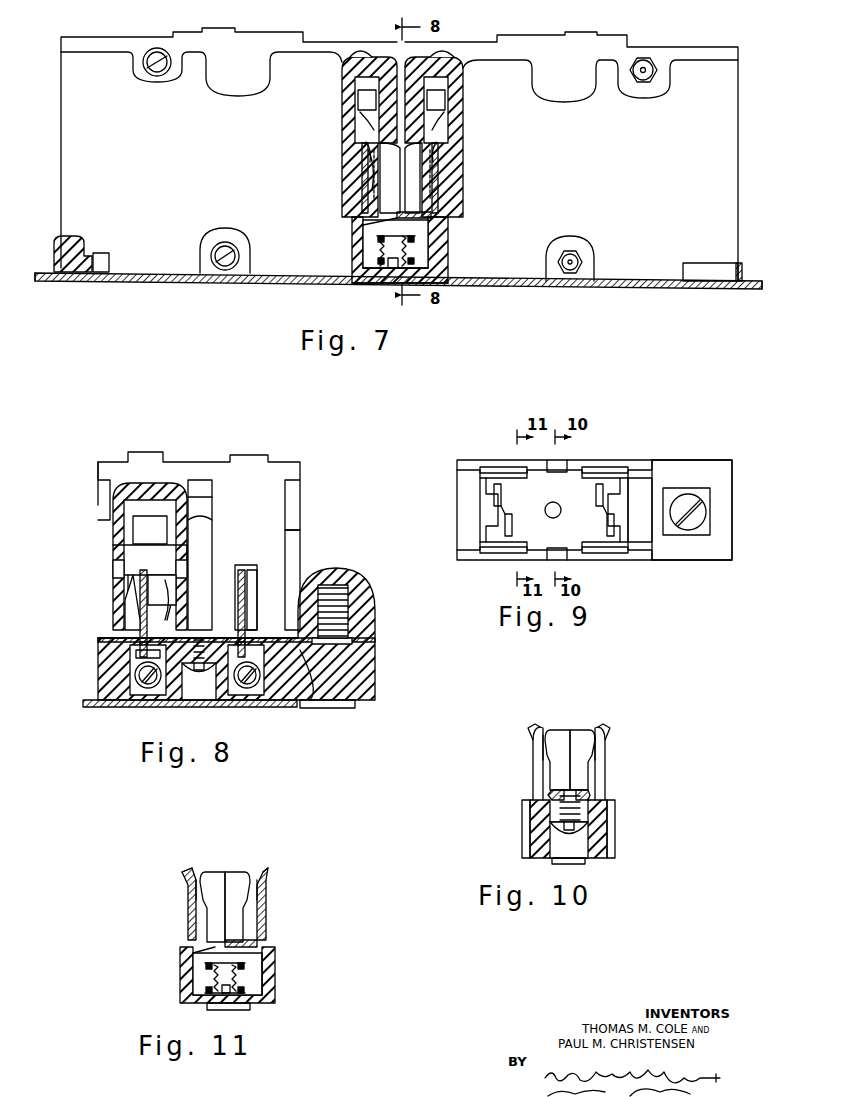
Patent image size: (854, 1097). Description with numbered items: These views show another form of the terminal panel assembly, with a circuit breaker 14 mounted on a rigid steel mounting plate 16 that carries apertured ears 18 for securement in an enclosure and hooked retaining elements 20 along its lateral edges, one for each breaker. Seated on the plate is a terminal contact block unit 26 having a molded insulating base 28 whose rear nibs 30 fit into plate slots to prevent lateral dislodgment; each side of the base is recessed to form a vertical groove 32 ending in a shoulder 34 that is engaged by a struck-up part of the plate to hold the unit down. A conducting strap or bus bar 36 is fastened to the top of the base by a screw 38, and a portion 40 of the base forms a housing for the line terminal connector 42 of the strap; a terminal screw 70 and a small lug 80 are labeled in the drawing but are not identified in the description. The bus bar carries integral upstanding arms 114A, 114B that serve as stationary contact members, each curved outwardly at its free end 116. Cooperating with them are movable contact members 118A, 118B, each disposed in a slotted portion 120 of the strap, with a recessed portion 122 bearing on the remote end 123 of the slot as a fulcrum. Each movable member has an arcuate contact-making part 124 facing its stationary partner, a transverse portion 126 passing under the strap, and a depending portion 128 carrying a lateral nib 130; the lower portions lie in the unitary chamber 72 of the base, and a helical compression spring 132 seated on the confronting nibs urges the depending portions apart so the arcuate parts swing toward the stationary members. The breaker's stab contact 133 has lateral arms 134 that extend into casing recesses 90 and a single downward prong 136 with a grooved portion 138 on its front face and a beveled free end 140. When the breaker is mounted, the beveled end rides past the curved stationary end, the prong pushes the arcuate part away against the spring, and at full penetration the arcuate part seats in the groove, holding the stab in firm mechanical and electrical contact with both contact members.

In FIG. 7, the circuit breaker 14 is at (97, 36).
In FIG. 7, the mounting plate 16 is at (200, 281).
In FIG. 7, the apertured ears 18 is at (46, 281).
In FIG. 7, the hooked retaining elements 20 is at (58, 247).
In FIG. 7, the terminal contact block unit 26 is at (440, 283).
In FIG. 8, the terminal contact block unit 26 is at (378, 678).
In FIG. 9, the terminal contact block unit 26 is at (694, 462).
In FIG. 10, the terminal contact block unit 26 is at (618, 834).
In FIG. 8, the insulating base 28 is at (375, 698).
In FIG. 10, the insulating base 28 is at (540, 834).
In FIG. 11, the insulating base 28 is at (265, 963).
In FIG. 8, the nibs 30 is at (160, 693).
In FIG. 10, the nibs 30 is at (565, 863).
In FIG. 11, the nibs 30 is at (230, 1010).
In FIG. 9, the vertical groove 32 is at (557, 463).
In FIG. 10, the shoulder 34 is at (526, 842).
In FIG. 8, the bus bar 36 is at (300, 655).
In FIG. 9, the bus bar 36 is at (639, 486).
In FIG. 10, the bus bar 36 is at (592, 792).
In FIG. 8, the screw 38 is at (208, 676).
In FIG. 9, the screw 38 is at (548, 513).
In FIG. 10, the screw 38 is at (569, 836).
In FIG. 8, the housing portion 40 is at (357, 582).
In FIG. 9, the housing portion 40 is at (718, 478).
In FIG. 8, the line terminal connector 42 is at (357, 634).
In FIG. 9, the line terminal connector 42 is at (708, 498).
In FIG. 8, the terminal screw 70 is at (338, 587).
In FIG. 9, the terminal screw 70 is at (697, 520).
In FIG. 7, the unitary chamber 72 is at (423, 249).
In FIG. 8, the unitary chamber 72 is at (167, 688).
In FIG. 11, the unitary chamber 72 is at (253, 978).
In FIG. 7, the lug 80 is at (62, 242).
In FIG. 8, the casing recesses 90 is at (113, 563).
In FIG. 7, the stationary contact member 114A is at (457, 150).
In FIG. 9, the stationary contact member 114A is at (504, 554).
In FIG. 10, the stationary contact member 114A is at (600, 752).
In FIG. 11, the stationary contact member 114A is at (266, 903).
In FIG. 7, the stationary contact member 114B is at (362, 176).
In FIG. 8, the stationary contact member 114B is at (132, 622).
In FIG. 9, the stationary contact member 114B is at (495, 466).
In FIG. 10, the stationary contact member 114B is at (537, 762).
In FIG. 11, the stationary contact member 114B is at (190, 910).
In FIG. 7, the curved end 116 is at (375, 163).
In FIG. 10, the curved end 116 is at (532, 731).
In FIG. 11, the curved end 116 is at (190, 878).
In FIG. 7, the movable contact member 118A is at (412, 195).
In FIG. 9, the movable contact member 118A is at (508, 523).
In FIG. 10, the movable contact member 118A is at (583, 733).
In FIG. 11, the movable contact member 118A is at (240, 880).
In FIG. 7, the movable contact member 118B is at (388, 198).
In FIG. 8, the movable contact member 118B is at (140, 603).
In FIG. 9, the movable contact member 118B is at (495, 495).
In FIG. 10, the movable contact member 118B is at (557, 733).
In FIG. 11, the movable contact member 118B is at (212, 880).
In FIG. 7, the slotted portion 120 is at (400, 213).
In FIG. 8, the slotted portion 120 is at (127, 638).
In FIG. 9, the slotted portion 120 is at (492, 482).
In FIG. 11, the slotted portion 120 is at (207, 953).
In FIG. 7, the recessed portion 122 is at (447, 215).
In FIG. 11, the recessed portion 122 is at (240, 940).
In FIG. 7, the slot end 123 is at (380, 235).
In FIG. 9, the slot end 123 is at (497, 510).
In FIG. 11, the slot end 123 is at (215, 947).
In FIG. 7, the arcuate contact-making part 124 is at (364, 162).
In FIG. 10, the arcuate contact-making part 124 is at (543, 744).
In FIG. 11, the arcuate contact-making part 124 is at (197, 893).
In FIG. 7, the transverse portion 126 is at (421, 227).
In FIG. 8, the transverse portion 126 is at (103, 655).
In FIG. 11, the transverse portion 126 is at (240, 957).
In FIG. 7, the depending portion 128 is at (388, 247).
In FIG. 11, the depending portion 128 is at (208, 977).
In FIG. 7, the lateral nib 130 is at (392, 280).
In FIG. 8, the lateral nib 130 is at (132, 677).
In FIG. 11, the lateral nib 130 is at (208, 992).
In FIG. 7, the helical compression spring 132 is at (382, 258).
In FIG. 8, the helical compression spring 132 is at (132, 688).
In FIG. 11, the helical compression spring 132 is at (213, 996).
In FIG. 7, the stab contact 133 is at (367, 96).
In FIG. 8, the stab contact 133 is at (148, 536).
In FIG. 7, the lateral arms 134 is at (370, 133).
In FIG. 8, the lateral arms 134 is at (115, 557).
In FIG. 7, the prong 136 is at (374, 150).
In FIG. 8, the prong 136 is at (157, 603).
In FIG. 8, the grooved portion 138 is at (135, 588).
In FIG. 7, the beveled end 140 is at (367, 186).
In FIG. 8, the beveled end 140 is at (155, 613).